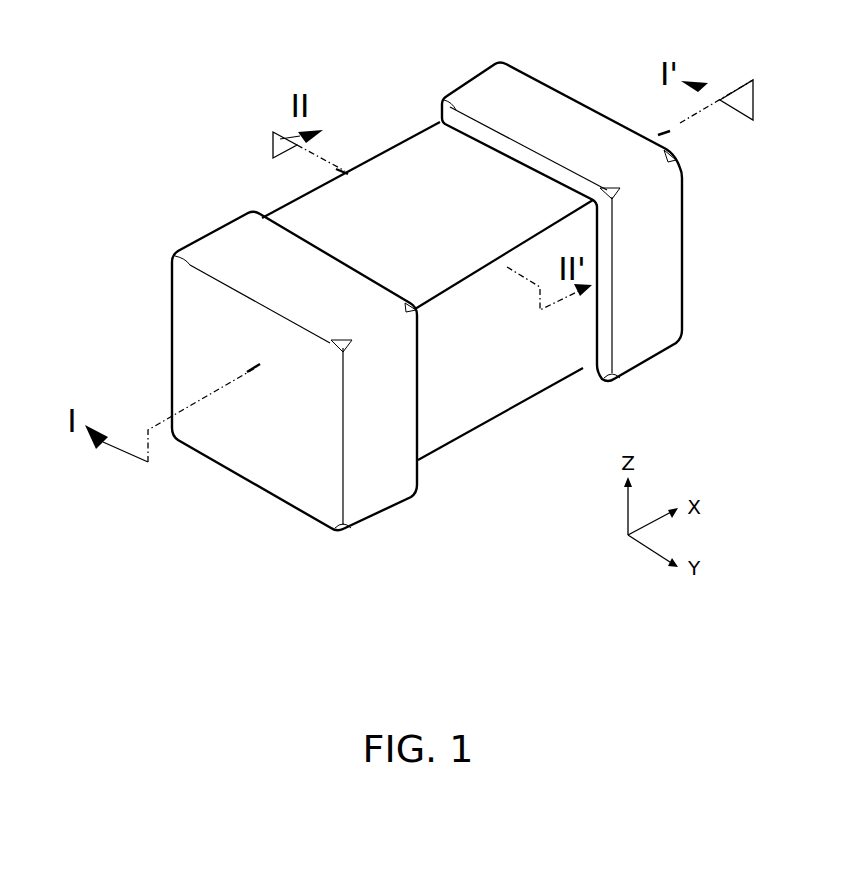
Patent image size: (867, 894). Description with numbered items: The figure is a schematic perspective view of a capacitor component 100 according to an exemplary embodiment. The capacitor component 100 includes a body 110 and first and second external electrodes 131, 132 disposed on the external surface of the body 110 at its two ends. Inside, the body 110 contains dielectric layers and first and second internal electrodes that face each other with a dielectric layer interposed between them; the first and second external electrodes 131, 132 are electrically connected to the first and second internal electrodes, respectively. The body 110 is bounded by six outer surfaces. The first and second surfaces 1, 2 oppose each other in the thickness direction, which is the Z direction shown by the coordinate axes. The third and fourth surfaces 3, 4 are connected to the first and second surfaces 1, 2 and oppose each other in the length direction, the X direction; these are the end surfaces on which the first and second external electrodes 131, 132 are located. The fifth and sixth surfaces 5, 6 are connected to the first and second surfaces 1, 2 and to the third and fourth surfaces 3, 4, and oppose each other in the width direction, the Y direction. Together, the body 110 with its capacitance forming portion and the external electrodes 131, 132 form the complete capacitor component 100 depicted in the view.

The capacitor component 100 is at (462, 274).
The body 110 is at (409, 276).
The first external electrode 131 is at (294, 346).
The second external electrode 132 is at (592, 199).
The first surface 1 is at (468, 382).
The second surface 2 is at (441, 180).
The third surface 3 is at (264, 426).
The fourth surface 4 is at (628, 237).
The fifth surface 5 is at (524, 352).
The sixth surface 6 is at (391, 202).